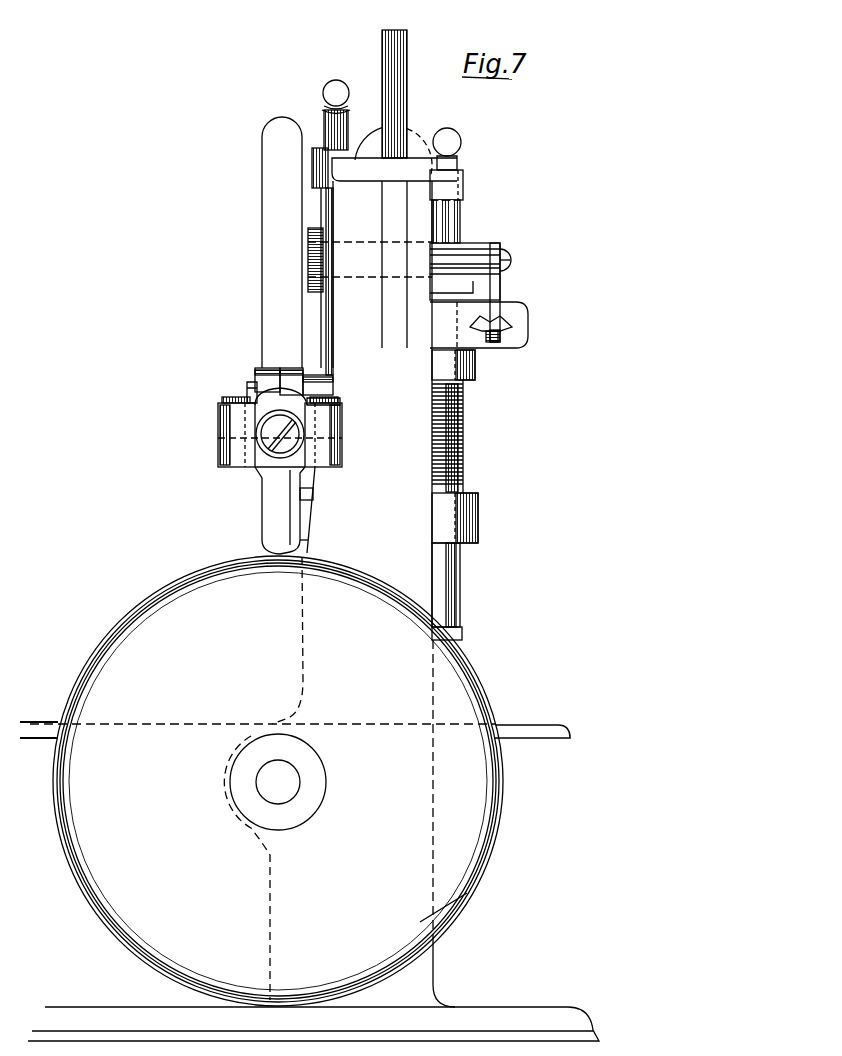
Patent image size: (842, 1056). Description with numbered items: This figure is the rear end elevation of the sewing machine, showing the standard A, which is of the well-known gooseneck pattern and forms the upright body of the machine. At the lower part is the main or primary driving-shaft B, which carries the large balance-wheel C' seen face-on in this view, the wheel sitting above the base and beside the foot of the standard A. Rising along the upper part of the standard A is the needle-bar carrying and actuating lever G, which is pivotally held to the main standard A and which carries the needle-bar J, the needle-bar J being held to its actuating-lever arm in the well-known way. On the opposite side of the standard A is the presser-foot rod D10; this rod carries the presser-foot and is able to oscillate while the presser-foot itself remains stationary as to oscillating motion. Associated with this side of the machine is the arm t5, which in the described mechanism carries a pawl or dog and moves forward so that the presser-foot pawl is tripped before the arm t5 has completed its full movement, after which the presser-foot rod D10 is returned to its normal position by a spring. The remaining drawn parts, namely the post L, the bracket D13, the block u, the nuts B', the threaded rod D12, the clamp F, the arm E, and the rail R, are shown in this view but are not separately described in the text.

The standard A is at (382, 328).
The needle-bar carrying and actuating lever G is at (268, 292).
The needle-bar J is at (349, 104).
The post L is at (349, 128).
The upper bracket D13 is at (463, 188).
The arm t5 is at (500, 288).
The wing nut block u is at (528, 313).
The adjusting nut B' is at (478, 446).
The threaded rod D12 is at (463, 428).
The presser-foot rod D10 is at (461, 578).
The clamp F is at (270, 438).
The arm E is at (278, 508).
The balance-wheel C' is at (296, 781).
The main or primary driving-shaft B is at (311, 782).
The rail R is at (546, 706).